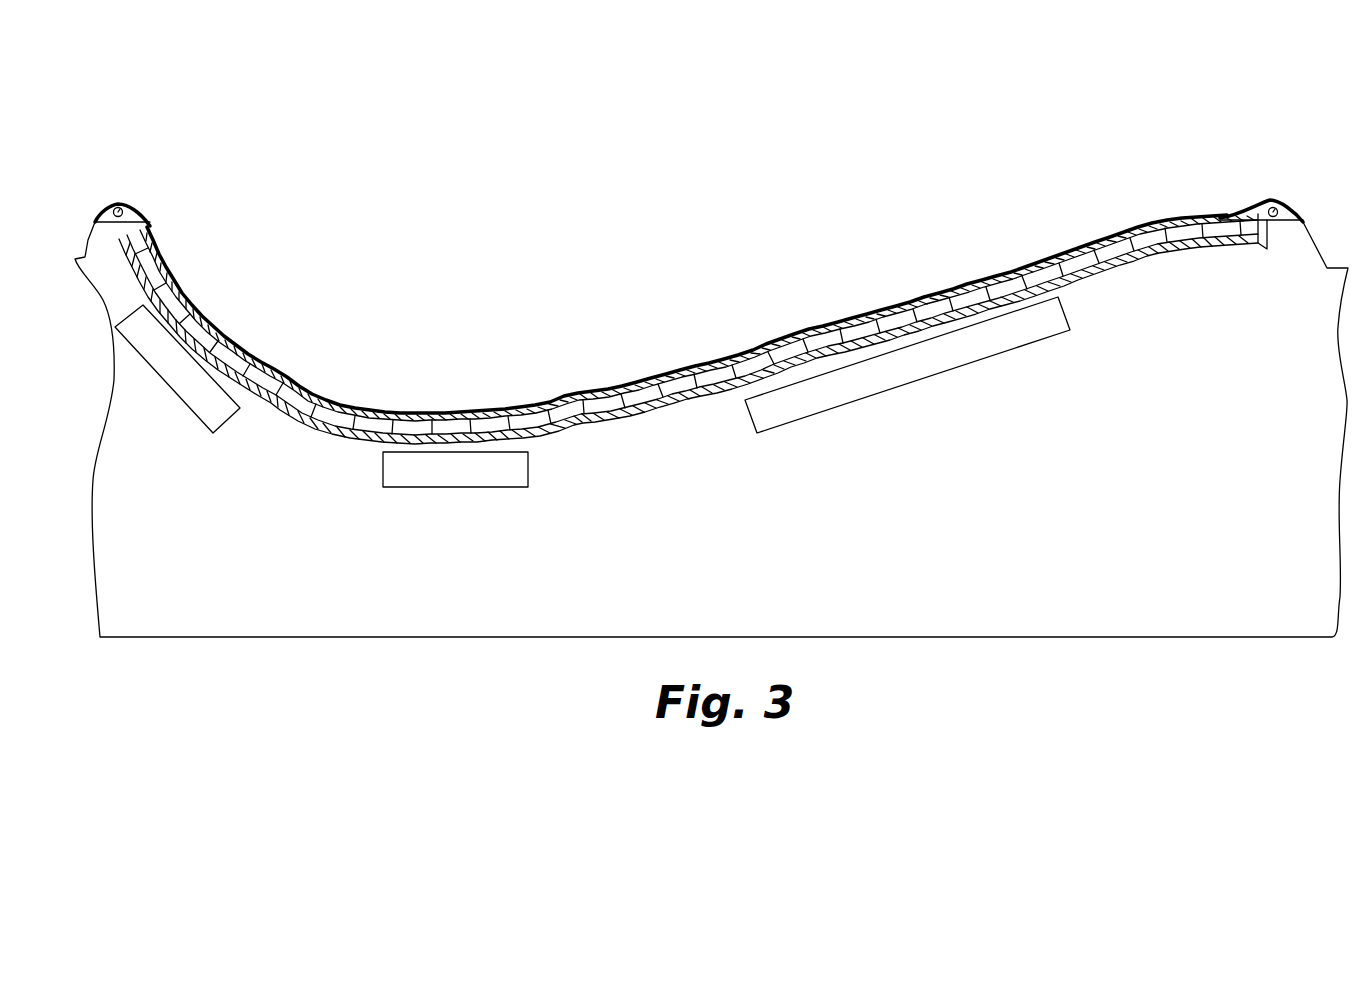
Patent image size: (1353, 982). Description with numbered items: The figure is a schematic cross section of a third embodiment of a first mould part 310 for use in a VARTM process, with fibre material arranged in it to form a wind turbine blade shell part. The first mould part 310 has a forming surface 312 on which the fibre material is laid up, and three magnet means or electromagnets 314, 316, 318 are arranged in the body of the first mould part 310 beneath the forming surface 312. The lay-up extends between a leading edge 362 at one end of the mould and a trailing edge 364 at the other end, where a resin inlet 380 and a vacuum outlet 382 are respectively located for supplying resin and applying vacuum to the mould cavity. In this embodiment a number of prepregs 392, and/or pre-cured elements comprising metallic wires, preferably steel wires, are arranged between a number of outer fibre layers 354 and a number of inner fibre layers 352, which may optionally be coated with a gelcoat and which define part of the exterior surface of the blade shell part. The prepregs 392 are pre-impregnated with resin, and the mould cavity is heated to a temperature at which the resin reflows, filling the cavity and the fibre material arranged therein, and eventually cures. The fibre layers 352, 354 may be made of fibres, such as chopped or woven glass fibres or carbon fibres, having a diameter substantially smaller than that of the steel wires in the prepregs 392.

The first mould part 310 is at (821, 514).
The forming surface 312 is at (1175, 245).
The magnet means/electromagnet 314 is at (207, 410).
The magnet means/electromagnet 316 is at (482, 470).
The magnet means/electromagnet 318 is at (937, 357).
The fibre layer 352 is at (1013, 292).
The fibre layer 354 is at (853, 310).
The leading edge 362 is at (95, 221).
The trailing edge 364 is at (1297, 220).
The resin inlet 380 is at (122, 206).
The vacuum outlet 382 is at (1270, 205).
The prepregs 392 is at (492, 427).